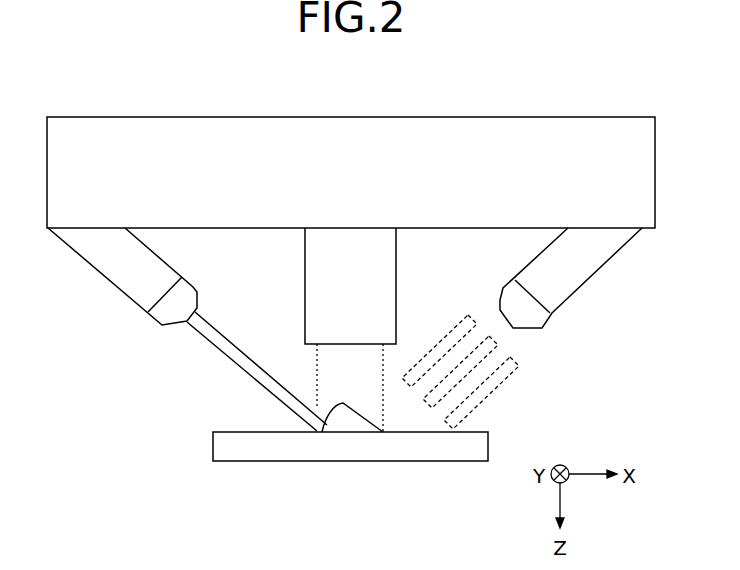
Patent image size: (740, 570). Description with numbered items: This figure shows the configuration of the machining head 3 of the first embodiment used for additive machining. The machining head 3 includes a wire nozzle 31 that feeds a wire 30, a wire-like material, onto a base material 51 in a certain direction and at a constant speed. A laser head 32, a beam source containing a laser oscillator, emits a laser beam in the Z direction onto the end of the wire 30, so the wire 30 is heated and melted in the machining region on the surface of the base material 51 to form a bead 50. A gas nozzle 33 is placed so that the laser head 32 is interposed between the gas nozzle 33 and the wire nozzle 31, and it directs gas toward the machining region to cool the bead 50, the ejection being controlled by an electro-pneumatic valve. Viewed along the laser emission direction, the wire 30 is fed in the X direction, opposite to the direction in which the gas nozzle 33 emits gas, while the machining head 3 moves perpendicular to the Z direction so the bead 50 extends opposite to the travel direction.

The machining head 3 is at (348, 117).
The wire 30 is at (255, 380).
The wire nozzle 31 is at (130, 302).
The laser head 32 is at (396, 259).
The gas nozzle 33 is at (565, 298).
The bead 50 is at (348, 422).
The base material 51 is at (250, 461).